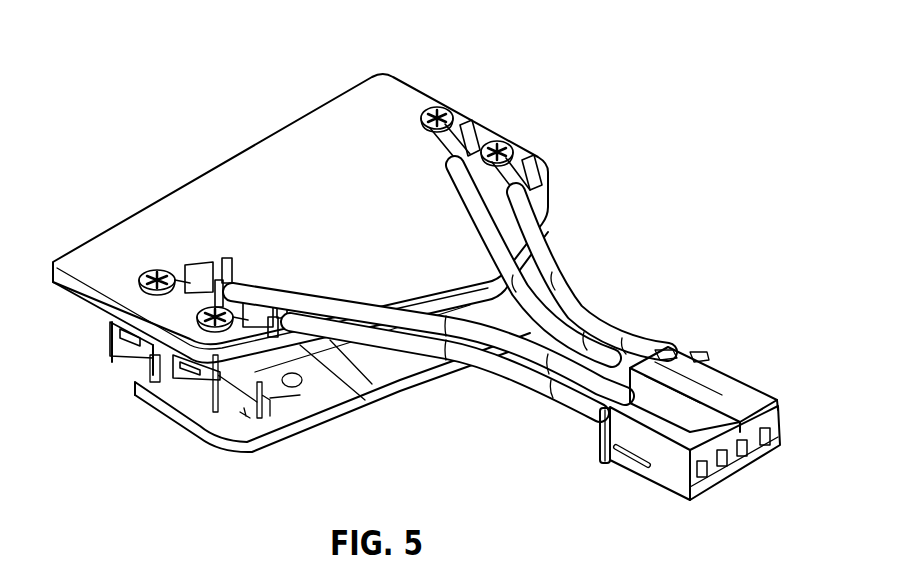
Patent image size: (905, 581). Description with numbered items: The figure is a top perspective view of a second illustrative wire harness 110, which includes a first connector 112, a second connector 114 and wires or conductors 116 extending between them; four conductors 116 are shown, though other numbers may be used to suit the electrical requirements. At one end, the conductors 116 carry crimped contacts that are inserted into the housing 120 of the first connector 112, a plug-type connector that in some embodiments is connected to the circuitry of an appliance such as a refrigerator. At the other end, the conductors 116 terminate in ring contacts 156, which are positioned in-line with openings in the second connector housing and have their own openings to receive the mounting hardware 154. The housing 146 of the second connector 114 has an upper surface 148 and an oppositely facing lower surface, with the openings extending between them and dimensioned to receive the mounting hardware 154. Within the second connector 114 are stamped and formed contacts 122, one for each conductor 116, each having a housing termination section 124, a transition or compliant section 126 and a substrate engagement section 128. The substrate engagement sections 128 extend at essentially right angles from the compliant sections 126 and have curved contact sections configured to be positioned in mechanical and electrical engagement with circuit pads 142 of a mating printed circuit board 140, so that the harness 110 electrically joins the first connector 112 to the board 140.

The wire harness 110 is at (435, 271).
The first connector 112 is at (726, 434).
The second connector 114 is at (320, 185).
The conductors 116 is at (637, 347).
The housing 120 is at (762, 457).
The contacts 122 is at (118, 374).
The housing termination sections 124 is at (143, 398).
The transition or compliant sections 126 is at (234, 386).
The substrate engagement sections 128 is at (290, 392).
The printed circuit board 140 is at (368, 377).
The circuit pads 142 is at (262, 410).
The housing 146 is at (352, 106).
The upper surface 148 is at (183, 261).
The mounting hardware 154 is at (450, 110).
The ring contacts 156 is at (470, 115).